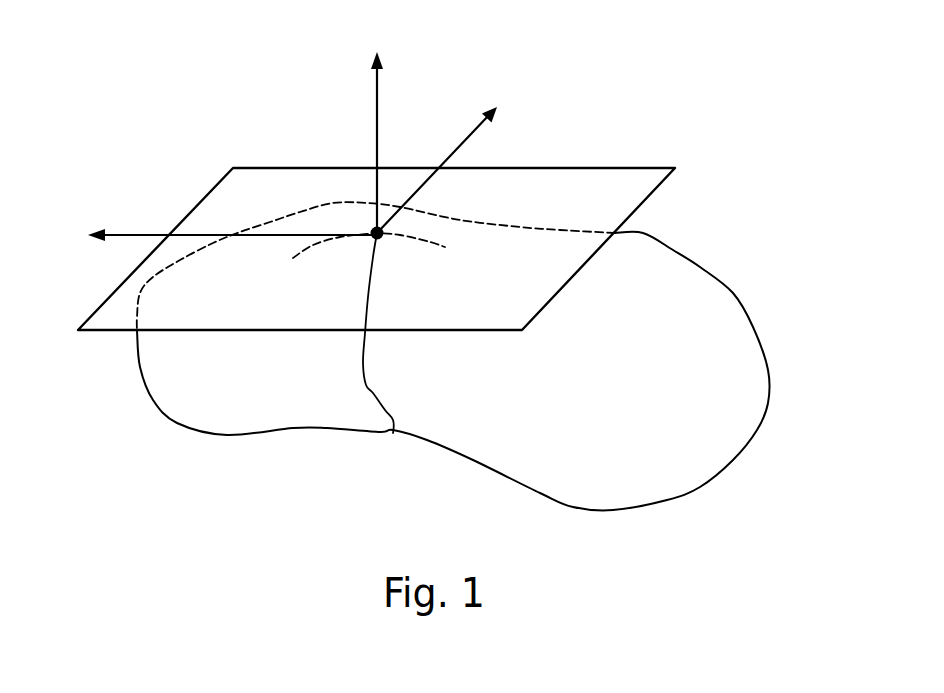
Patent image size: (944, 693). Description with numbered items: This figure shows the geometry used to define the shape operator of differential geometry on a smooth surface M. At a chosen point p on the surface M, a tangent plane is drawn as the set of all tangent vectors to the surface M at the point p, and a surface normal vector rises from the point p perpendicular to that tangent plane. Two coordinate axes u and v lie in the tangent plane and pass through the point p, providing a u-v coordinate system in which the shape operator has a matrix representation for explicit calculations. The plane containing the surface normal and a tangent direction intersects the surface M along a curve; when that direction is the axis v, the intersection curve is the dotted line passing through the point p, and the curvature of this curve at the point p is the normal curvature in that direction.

The coordinate axis u is at (477, 133).
The coordinate axis v is at (133, 233).
The smooth surface M is at (743, 303).
The point p is at (393, 433).